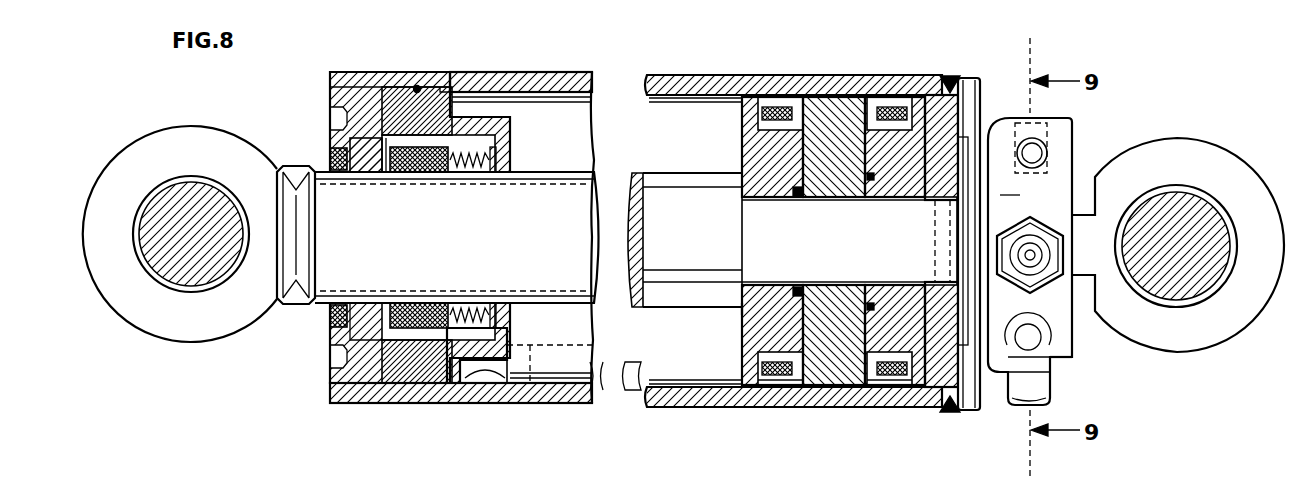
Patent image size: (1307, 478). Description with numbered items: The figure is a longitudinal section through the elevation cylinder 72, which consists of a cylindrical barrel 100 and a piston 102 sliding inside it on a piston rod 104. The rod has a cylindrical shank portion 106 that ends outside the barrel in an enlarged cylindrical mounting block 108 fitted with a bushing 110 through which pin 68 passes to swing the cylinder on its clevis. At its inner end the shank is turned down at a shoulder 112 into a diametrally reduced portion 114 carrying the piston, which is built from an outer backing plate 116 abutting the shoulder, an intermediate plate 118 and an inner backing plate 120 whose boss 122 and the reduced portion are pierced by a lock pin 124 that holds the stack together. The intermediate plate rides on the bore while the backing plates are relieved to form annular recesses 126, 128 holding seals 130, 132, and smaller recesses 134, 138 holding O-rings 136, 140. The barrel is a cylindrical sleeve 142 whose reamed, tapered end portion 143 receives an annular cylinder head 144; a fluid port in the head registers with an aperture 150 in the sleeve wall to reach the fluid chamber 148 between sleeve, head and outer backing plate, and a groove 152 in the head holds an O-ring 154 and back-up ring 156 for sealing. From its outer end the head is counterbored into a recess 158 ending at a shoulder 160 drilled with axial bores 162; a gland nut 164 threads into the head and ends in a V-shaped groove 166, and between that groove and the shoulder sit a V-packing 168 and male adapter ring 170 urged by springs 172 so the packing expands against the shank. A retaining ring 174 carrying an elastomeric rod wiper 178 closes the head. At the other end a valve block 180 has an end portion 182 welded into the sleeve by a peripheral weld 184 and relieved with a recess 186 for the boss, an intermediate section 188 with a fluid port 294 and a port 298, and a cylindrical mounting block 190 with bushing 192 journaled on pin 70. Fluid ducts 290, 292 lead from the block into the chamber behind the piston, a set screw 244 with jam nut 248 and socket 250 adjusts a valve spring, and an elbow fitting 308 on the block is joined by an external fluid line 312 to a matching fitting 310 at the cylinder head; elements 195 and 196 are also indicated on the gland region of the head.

The pin 68 is at (150, 283).
The pin 70 is at (1195, 280).
The elevation cylinder 72 is at (347, 409).
The cylindrical barrel 100 is at (545, 92).
The piston 102 is at (835, 93).
The piston rod 104 is at (280, 306).
The cylindrical shank portion 106 is at (690, 184).
The cylindrical mounting block 108 is at (188, 127).
The bushing 110 is at (152, 185).
The shoulder 112 is at (740, 314).
The diametrally reduced portion 114 is at (758, 234).
The outer backing plate 116 is at (752, 96).
The intermediate plate 118 is at (832, 382).
The inner backing plate 120 is at (922, 96).
The boss 122 is at (990, 118).
The lock pin 124 is at (933, 400).
The annular recess 126 is at (758, 387).
The annular recess 128 is at (902, 387).
The seal 130 is at (783, 387).
The seal 132 is at (867, 387).
The annular recess 134 is at (795, 288).
The O-ring 136 is at (798, 288).
The annular recess 138 is at (802, 192).
The O-ring 140 is at (871, 181).
The cylindrical sleeve 142 is at (490, 78).
The diametrally enlarged end portion 143 is at (350, 74).
The annular cylinder head 144 is at (402, 380).
The fluid chamber 148 is at (594, 338).
The aperture 150 is at (478, 376).
The groove 152 is at (413, 85).
The O-ring 154 is at (437, 88).
The back-up ring 156 is at (420, 86).
The diametrally enlarged recess 158 is at (388, 303).
The shoulder 160 is at (440, 173).
The axially extending bores 162 is at (468, 170).
The gland nut 164 is at (370, 173).
The V-shaped annular groove 166 is at (388, 173).
The V-packing 168 is at (425, 303).
The male adapter ring 170 is at (455, 305).
The springs 172 is at (485, 305).
The retaining ring 174 is at (330, 104).
The elastomeric rod wiper 178 is at (330, 318).
The valve block 180 is at (1082, 358).
The end portion 182 is at (948, 78).
The peripheral weld 184 is at (958, 82).
The recess 186 is at (960, 406).
The intermediate section 188 is at (1060, 138).
The cylindrical mounting block 190 is at (1248, 178).
The bushing 192 is at (1232, 222).
The seal retainer 195 is at (493, 168).
The port ring 196 is at (508, 338).
The set screw 244 is at (1040, 262).
The jam nut 248 is at (1018, 290).
The socket 250 is at (1075, 290).
The fluid duct 290 is at (1040, 176).
The fluid duct 292 is at (1012, 195).
The fluid port 294 is at (1043, 157).
The port 298 is at (1057, 364).
The elbow-forming fitting 308 is at (1045, 403).
The elbow-forming fitting 310 is at (522, 376).
The fluid line 312 is at (633, 392).